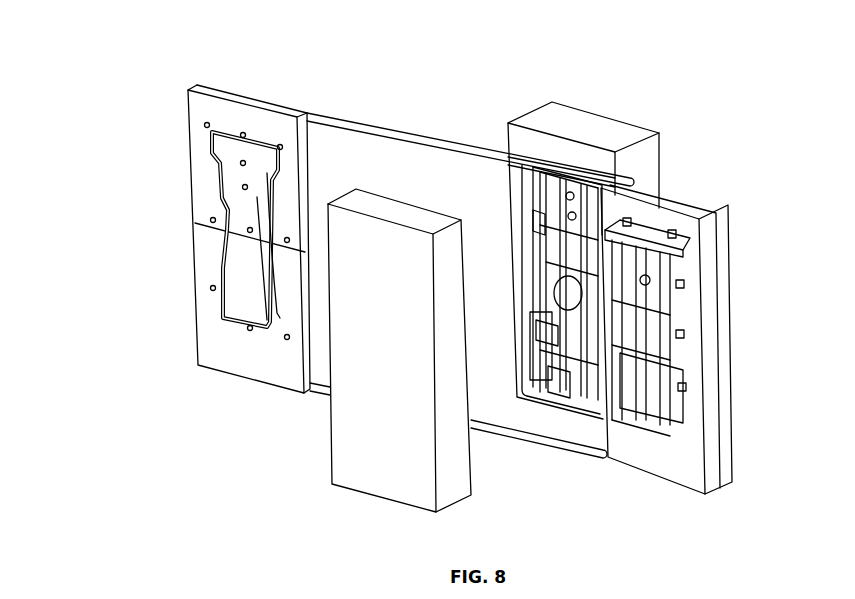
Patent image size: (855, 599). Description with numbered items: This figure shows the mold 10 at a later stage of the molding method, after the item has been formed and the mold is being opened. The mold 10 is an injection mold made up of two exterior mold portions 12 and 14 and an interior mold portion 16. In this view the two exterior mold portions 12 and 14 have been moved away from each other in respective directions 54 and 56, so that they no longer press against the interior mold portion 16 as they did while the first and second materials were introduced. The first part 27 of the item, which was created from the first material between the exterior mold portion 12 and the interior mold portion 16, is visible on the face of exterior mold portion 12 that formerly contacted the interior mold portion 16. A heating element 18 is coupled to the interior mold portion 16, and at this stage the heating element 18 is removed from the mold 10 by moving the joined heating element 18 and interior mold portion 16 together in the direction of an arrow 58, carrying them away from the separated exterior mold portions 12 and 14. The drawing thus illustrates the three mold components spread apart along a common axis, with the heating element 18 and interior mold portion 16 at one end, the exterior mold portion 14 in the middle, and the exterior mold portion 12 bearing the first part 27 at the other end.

The mold 10 is at (338, 73).
The exterior mold portion 12 is at (590, 123).
The exterior mold portion 14 is at (362, 432).
The interior mold portion 16 is at (723, 398).
The heating element 18 is at (205, 200).
The first part 27 is at (570, 355).
The direction 54 is at (680, 113).
The direction 56 is at (182, 385).
The arrow 58 is at (171, 83).